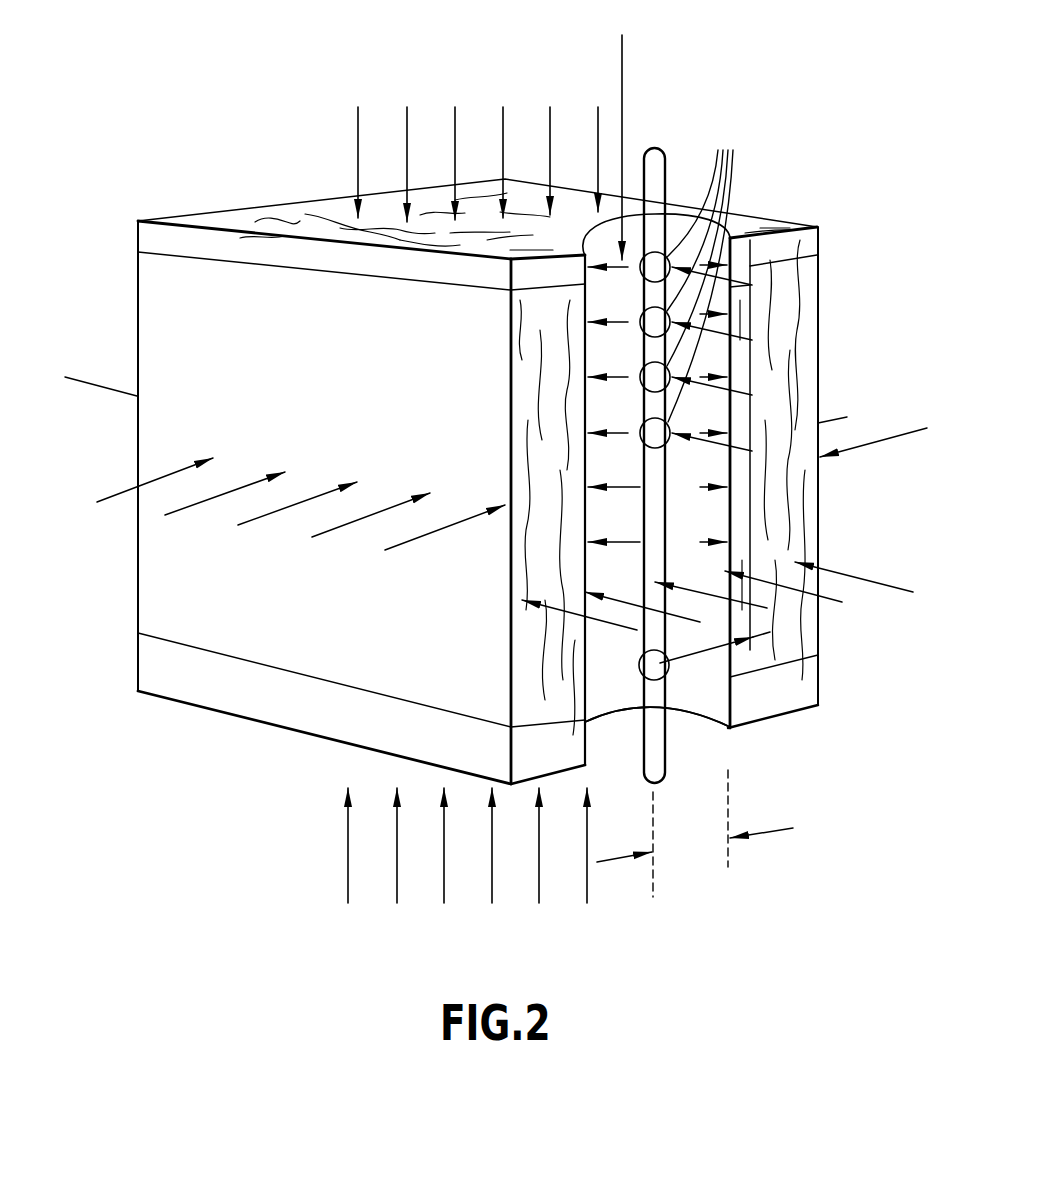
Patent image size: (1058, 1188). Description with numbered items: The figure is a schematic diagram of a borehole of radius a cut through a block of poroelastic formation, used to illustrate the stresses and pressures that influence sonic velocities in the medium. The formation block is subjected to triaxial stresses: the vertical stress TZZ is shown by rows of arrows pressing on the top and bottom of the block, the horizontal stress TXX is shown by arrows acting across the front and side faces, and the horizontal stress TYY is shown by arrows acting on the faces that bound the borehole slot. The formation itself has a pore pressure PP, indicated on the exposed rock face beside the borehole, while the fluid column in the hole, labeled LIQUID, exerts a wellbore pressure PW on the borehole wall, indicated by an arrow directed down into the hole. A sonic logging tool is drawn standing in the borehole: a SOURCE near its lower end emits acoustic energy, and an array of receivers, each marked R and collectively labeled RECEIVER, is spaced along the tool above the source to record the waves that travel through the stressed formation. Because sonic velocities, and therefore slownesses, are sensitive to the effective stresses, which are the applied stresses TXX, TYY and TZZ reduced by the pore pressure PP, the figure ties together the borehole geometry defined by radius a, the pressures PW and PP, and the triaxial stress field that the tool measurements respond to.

The receiver R is at (655, 350).
The acoustic source SOURCE is at (677, 672).
The borehole liquid LIQUID is at (610, 693).
The receiver array RECEIVER is at (737, 271).
The triaxial stress Tzz TZZ is at (473, 511).
The wellbore pressure PW is at (633, 130).
The pore pressure PP is at (772, 330).
The triaxial stress Txx TXX is at (493, 462).
The triaxial stress Tyy TYY is at (477, 491).
The borehole radius a is at (695, 833).